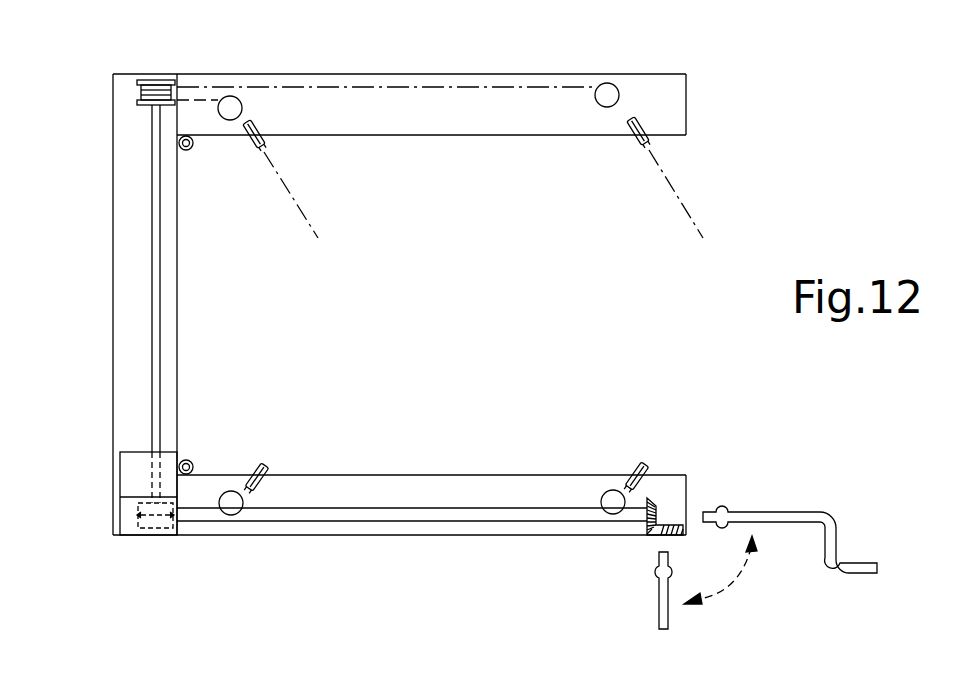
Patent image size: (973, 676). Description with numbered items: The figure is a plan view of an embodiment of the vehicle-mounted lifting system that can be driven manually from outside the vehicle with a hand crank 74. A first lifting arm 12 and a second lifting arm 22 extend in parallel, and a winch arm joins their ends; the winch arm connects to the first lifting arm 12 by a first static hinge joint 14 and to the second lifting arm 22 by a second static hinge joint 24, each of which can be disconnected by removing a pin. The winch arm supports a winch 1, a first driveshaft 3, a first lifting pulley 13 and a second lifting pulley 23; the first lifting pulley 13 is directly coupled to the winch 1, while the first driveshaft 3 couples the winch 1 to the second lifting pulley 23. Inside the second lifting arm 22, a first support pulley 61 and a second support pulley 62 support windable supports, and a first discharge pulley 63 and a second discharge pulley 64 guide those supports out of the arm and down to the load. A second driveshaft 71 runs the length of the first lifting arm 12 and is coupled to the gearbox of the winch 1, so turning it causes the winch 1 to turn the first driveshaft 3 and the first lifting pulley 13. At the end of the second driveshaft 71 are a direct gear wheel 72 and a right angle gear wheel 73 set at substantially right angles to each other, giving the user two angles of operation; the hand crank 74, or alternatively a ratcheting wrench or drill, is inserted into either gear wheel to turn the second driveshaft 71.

The winch 1 is at (119, 472).
The first driveshaft 3 is at (163, 292).
The first lifting arm 12 is at (450, 474).
The first lifting pulley 13 is at (153, 532).
The first static hinge joint 14 is at (191, 460).
The second lifting arm 22 is at (450, 137).
The second lifting pulley 23 is at (137, 92).
The second static hinge joint 24 is at (191, 150).
The first support pulley 61 is at (240, 100).
The second support pulley 62 is at (616, 90).
The first discharge pulley 63 is at (253, 150).
The second discharge pulley 64 is at (641, 148).
The second driveshaft 71 is at (262, 523).
The direct gear wheel 72 is at (650, 497).
The right angle gear wheel 73 is at (651, 532).
The hand crank 74 is at (836, 535).